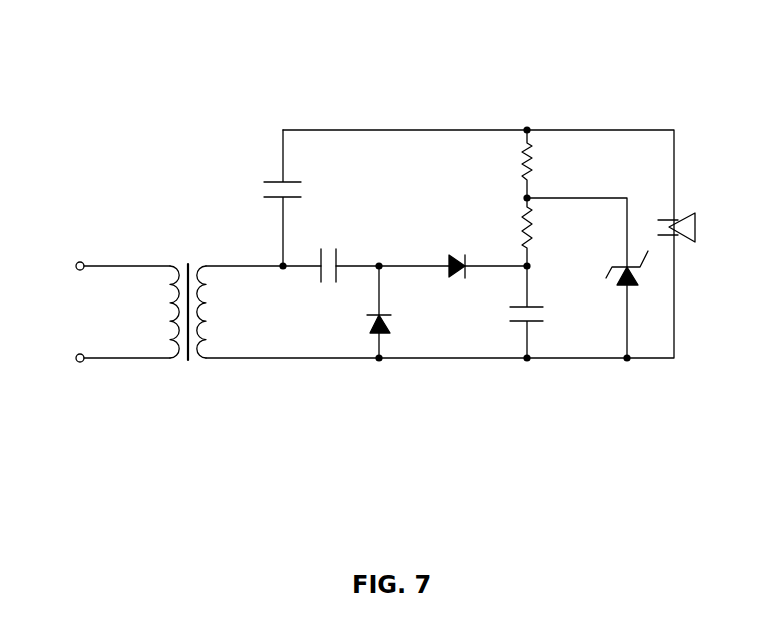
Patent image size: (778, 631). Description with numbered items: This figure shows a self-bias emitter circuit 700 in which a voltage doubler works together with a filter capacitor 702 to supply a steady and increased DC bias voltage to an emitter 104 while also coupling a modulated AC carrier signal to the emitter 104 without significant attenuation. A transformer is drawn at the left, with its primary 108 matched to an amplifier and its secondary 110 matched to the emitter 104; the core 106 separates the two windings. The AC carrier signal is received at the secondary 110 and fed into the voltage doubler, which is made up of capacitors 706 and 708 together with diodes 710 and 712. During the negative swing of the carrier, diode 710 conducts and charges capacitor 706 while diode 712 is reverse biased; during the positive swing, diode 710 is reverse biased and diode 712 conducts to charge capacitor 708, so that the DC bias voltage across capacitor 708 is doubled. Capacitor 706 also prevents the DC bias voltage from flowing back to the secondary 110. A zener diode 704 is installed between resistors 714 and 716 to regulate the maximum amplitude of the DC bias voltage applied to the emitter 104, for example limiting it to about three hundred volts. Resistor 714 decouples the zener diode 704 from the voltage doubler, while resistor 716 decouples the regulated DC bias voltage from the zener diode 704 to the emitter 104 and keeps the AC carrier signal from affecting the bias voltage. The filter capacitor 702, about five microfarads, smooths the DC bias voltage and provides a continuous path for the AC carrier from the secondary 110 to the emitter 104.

The self-bias emitter circuit 700 is at (92, 108).
The emitter 104 is at (696, 222).
The transformer core 106 is at (186, 365).
The primary 108 is at (170, 264).
The secondary 110 is at (205, 365).
The filter capacitor 702 is at (272, 192).
The zener diode 704 is at (631, 283).
The capacitor 706 is at (337, 258).
The capacitor 708 is at (533, 322).
The diode 710 is at (382, 334).
The diode 712 is at (458, 254).
The resistor 714 is at (533, 236).
The resistor 716 is at (526, 165).